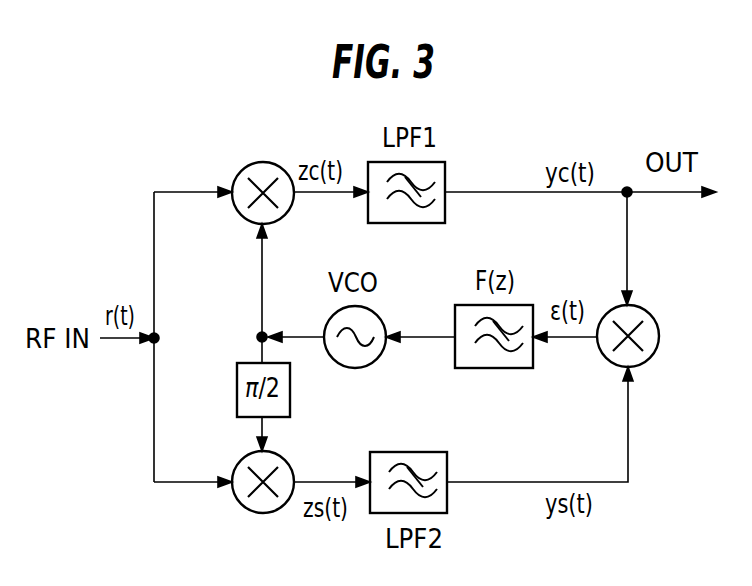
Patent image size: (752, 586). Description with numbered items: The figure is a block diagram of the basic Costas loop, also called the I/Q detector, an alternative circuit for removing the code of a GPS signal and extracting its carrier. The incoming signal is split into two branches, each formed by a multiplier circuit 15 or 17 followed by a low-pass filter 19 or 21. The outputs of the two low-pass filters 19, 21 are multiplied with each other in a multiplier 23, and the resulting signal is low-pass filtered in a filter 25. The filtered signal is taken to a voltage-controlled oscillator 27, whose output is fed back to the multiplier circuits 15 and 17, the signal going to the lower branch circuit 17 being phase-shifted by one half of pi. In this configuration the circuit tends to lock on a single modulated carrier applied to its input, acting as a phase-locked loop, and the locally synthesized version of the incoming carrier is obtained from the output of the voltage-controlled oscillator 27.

The multiplier circuit 15 is at (250, 165).
The multiplier circuit 17 is at (258, 513).
The low-pass filter 19 is at (395, 223).
The low-pass filter 21 is at (400, 452).
The multiplier 23 is at (660, 336).
The filter 25 is at (500, 368).
The voltage-controlled oscillator 27 is at (348, 368).